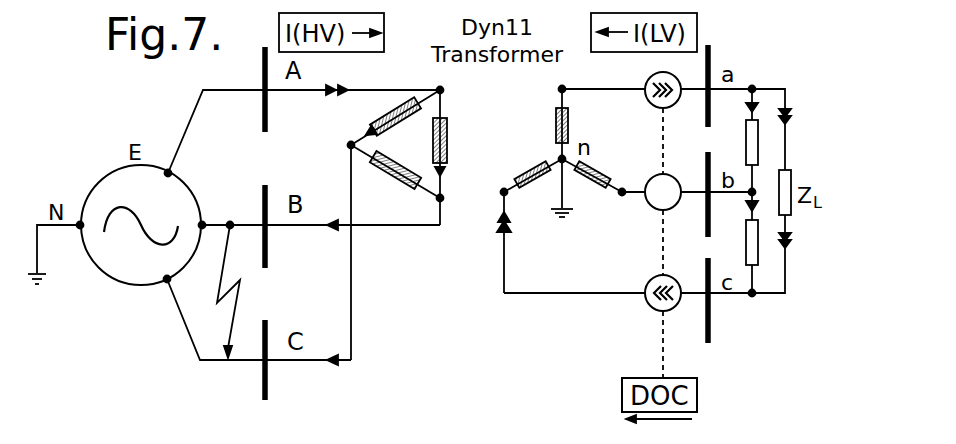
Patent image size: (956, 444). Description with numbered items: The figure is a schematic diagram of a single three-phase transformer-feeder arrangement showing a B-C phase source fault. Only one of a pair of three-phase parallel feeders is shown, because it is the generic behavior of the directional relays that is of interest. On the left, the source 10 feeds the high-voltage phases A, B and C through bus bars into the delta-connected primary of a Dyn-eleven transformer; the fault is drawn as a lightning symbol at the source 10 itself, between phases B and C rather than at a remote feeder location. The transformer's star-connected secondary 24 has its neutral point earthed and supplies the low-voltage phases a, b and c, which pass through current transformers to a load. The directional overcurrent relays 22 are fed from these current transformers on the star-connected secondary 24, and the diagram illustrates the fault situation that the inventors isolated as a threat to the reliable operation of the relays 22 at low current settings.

The source 10 is at (118, 285).
The directional overcurrent relay 22 is at (636, 314).
The star-connected secondary 24 is at (536, 134).